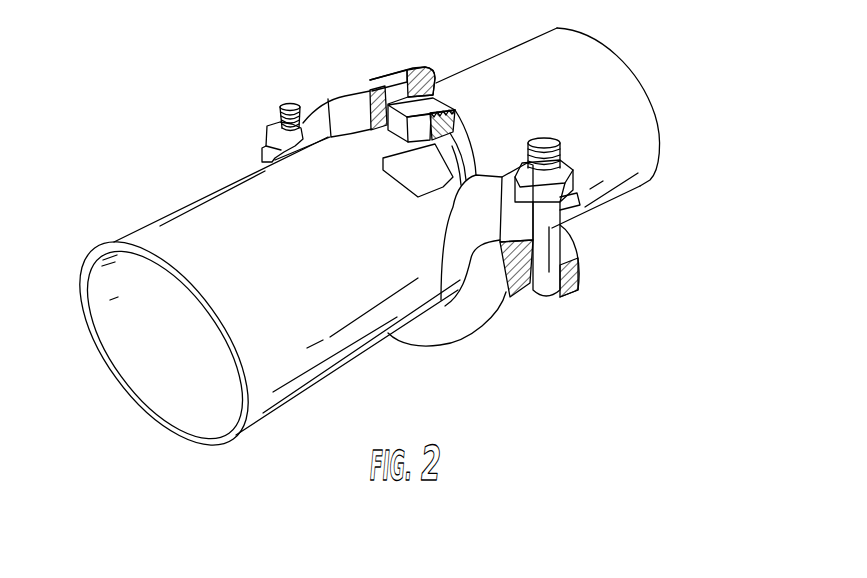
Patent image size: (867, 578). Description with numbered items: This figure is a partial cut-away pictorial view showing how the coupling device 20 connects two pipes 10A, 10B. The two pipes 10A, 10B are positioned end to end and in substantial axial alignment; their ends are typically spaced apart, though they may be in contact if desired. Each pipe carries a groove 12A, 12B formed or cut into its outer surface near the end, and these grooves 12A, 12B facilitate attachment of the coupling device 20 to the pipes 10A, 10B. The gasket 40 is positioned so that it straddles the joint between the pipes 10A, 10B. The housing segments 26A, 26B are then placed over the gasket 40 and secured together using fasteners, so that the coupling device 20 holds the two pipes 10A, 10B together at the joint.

The coupling device 20 is at (297, 72).
The first pipe 10A is at (217, 190).
The second pipe 10B is at (640, 165).
The groove of the first pipe 12A is at (442, 290).
The groove of the second pipe 12B is at (477, 125).
The first housing segment 26A is at (284, 136).
The second housing segment 26B is at (512, 300).
The gasket 40 is at (412, 107).